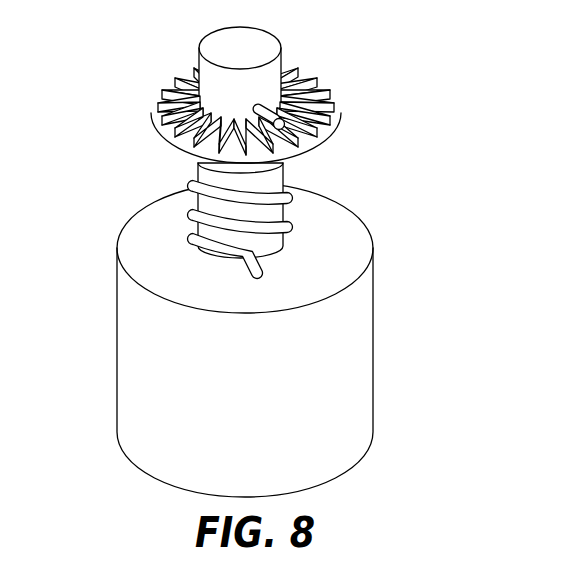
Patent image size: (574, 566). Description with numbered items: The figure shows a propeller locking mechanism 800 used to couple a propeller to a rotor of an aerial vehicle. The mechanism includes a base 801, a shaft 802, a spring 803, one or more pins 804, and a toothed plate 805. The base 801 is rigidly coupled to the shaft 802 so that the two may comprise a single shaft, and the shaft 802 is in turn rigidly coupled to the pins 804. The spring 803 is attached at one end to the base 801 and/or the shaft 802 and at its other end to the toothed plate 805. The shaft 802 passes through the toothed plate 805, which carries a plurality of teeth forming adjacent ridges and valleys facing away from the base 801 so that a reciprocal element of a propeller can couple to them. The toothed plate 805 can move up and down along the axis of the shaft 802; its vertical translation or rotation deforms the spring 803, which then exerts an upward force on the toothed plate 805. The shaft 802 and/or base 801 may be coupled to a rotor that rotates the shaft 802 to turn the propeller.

The propeller locking mechanism 800 is at (85, 173).
The base 801 is at (320, 412).
The shaft 802 is at (214, 82).
The spring 803 is at (285, 223).
The pins 804 is at (202, 87).
The toothed plate 805 is at (325, 130).